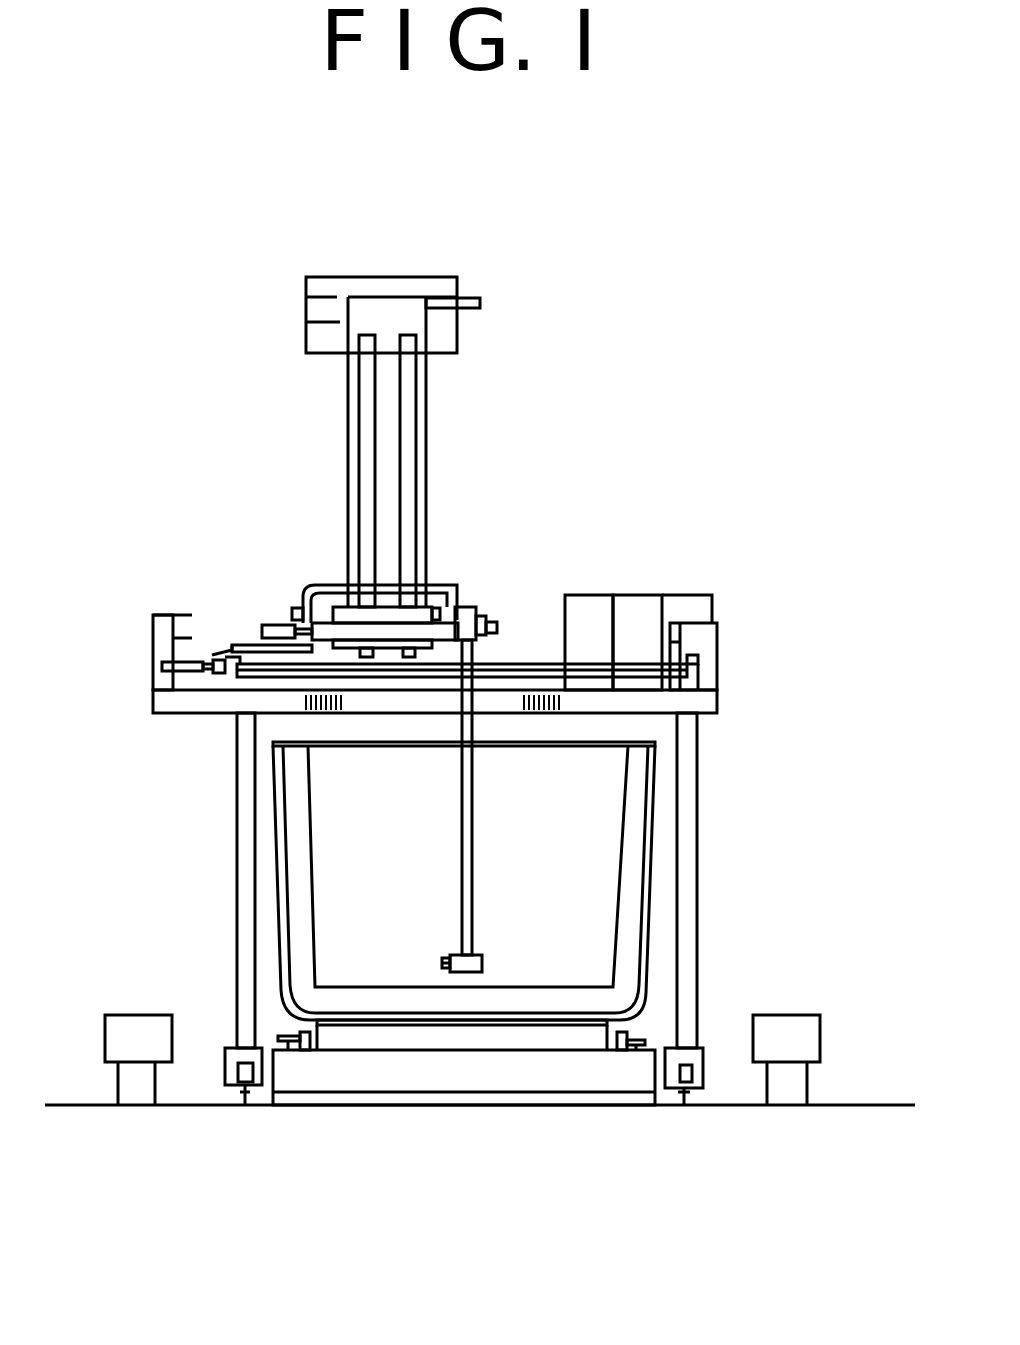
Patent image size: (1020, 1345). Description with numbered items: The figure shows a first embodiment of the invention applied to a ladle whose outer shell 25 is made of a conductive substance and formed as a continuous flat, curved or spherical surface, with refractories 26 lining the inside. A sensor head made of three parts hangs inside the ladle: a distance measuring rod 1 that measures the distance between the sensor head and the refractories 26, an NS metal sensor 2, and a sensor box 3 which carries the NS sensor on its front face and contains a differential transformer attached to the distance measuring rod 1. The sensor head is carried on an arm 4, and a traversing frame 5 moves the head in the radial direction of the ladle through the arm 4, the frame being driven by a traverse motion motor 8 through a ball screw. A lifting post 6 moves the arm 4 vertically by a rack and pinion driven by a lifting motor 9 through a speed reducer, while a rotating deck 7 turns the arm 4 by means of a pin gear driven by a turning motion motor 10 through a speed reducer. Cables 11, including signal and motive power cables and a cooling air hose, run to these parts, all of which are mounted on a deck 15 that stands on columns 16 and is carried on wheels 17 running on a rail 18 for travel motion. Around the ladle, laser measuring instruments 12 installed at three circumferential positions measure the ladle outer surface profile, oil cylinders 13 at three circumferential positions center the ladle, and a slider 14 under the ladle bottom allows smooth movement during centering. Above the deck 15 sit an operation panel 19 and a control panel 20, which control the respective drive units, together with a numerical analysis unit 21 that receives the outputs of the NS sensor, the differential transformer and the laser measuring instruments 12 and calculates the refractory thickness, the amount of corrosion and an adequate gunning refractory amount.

The distance measuring rod 1 is at (442, 964).
The NS metal sensor 2 is at (445, 960).
The sensor box 3 is at (482, 960).
The arm 4 is at (472, 840).
The traversing frame 5 is at (458, 600).
The lifting post 6 is at (418, 487).
The rotating deck 7 is at (527, 668).
The traverse motion motor 8 is at (292, 612).
The lifting motor 9 is at (262, 630).
The turning motion motor 10 is at (162, 666).
The cables 11 is at (718, 680).
The laser measuring instruments 12 is at (778, 1032).
The oil cylinders 13 is at (643, 1037).
The slider 14 is at (605, 1052).
The deck 15 is at (718, 708).
The columns 16 is at (697, 847).
The wheels 17 is at (692, 1072).
The rail 18 is at (248, 1090).
The operation panel 19 is at (578, 598).
The control panel 20 is at (630, 598).
The numerical analysis unit 21 is at (692, 598).
The outer shell 25 is at (286, 805).
The refractories 26 is at (305, 872).